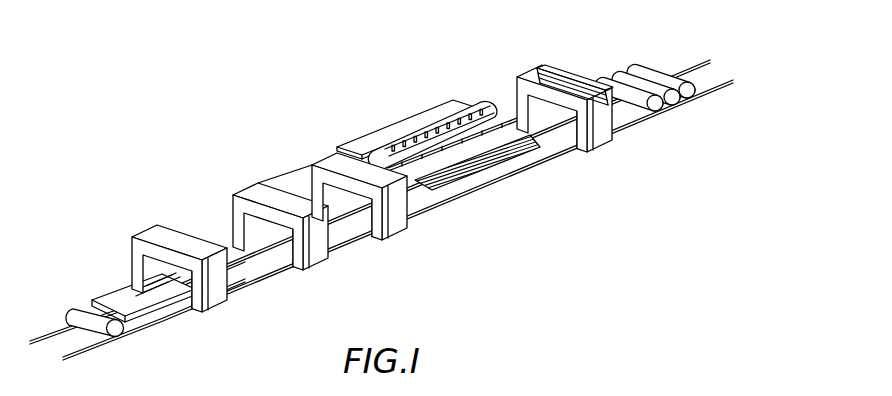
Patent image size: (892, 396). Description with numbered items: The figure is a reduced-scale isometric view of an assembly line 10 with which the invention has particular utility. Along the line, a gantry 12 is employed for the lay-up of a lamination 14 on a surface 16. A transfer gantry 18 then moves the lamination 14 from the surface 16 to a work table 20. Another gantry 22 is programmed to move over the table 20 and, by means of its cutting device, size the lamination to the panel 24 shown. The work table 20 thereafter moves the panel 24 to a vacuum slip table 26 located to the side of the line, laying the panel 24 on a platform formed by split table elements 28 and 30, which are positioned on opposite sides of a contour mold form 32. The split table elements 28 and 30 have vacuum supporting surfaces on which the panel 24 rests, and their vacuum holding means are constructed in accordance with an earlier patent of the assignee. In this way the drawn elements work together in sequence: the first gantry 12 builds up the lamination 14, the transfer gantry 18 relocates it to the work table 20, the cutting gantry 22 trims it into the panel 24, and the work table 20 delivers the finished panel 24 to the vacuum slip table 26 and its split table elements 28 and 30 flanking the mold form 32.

The assembly line 10 is at (187, 192).
The gantry 12 is at (150, 232).
The lamination 14 is at (130, 285).
The surface 16 is at (153, 312).
The transfer gantry 18 is at (283, 182).
The work table 20 is at (550, 152).
The gantry 22 is at (563, 73).
The panel 24 is at (487, 163).
The vacuum slip table 26 is at (481, 90).
The split table element 28 is at (365, 143).
The split table element 30 is at (470, 137).
The contour mold form 32 is at (420, 137).